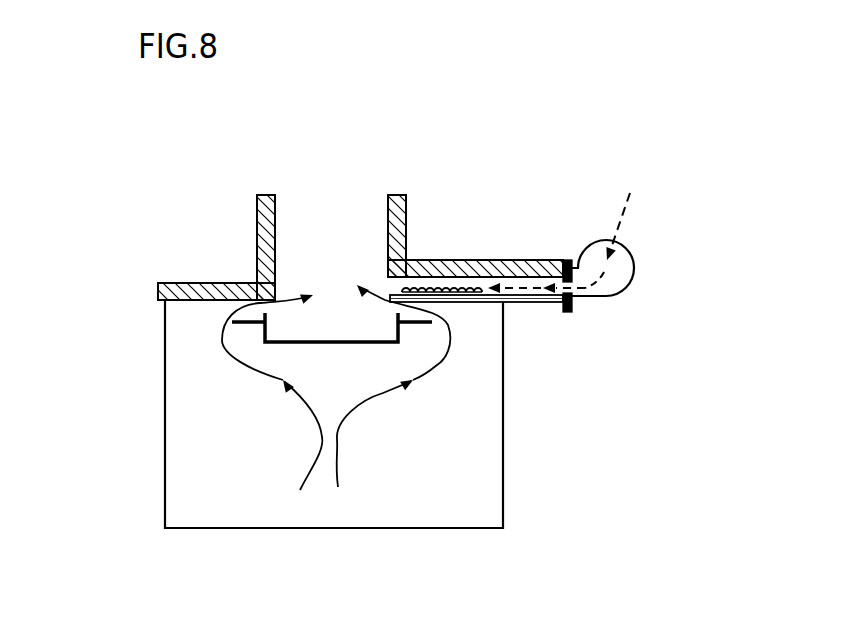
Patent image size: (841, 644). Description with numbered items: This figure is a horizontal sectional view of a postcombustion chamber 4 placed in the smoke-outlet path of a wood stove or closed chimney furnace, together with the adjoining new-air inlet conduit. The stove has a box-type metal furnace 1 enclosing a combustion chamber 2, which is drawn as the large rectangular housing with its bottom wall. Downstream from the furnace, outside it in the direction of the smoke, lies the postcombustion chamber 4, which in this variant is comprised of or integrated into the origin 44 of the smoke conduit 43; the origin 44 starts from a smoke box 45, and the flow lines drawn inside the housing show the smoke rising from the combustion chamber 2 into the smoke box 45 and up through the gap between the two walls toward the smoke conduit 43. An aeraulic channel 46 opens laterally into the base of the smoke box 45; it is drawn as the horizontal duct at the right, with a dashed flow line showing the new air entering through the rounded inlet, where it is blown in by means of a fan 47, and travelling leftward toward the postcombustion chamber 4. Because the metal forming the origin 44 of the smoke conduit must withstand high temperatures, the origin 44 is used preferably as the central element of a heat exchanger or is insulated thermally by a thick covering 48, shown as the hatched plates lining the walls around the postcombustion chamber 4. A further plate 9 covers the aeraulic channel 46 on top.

The metal furnace 1 is at (519, 497).
The combustion chamber 2 is at (440, 475).
The postcombustion chamber 4 is at (353, 215).
The cover plate 9 is at (462, 267).
The smoke conduit 43 is at (245, 191).
The origin of the smoke conduit 44 is at (257, 252).
The smoke box 45 is at (210, 384).
The aeraulic channel 46 is at (502, 251).
The fan 47 is at (645, 267).
The thick covering 48 is at (175, 283).